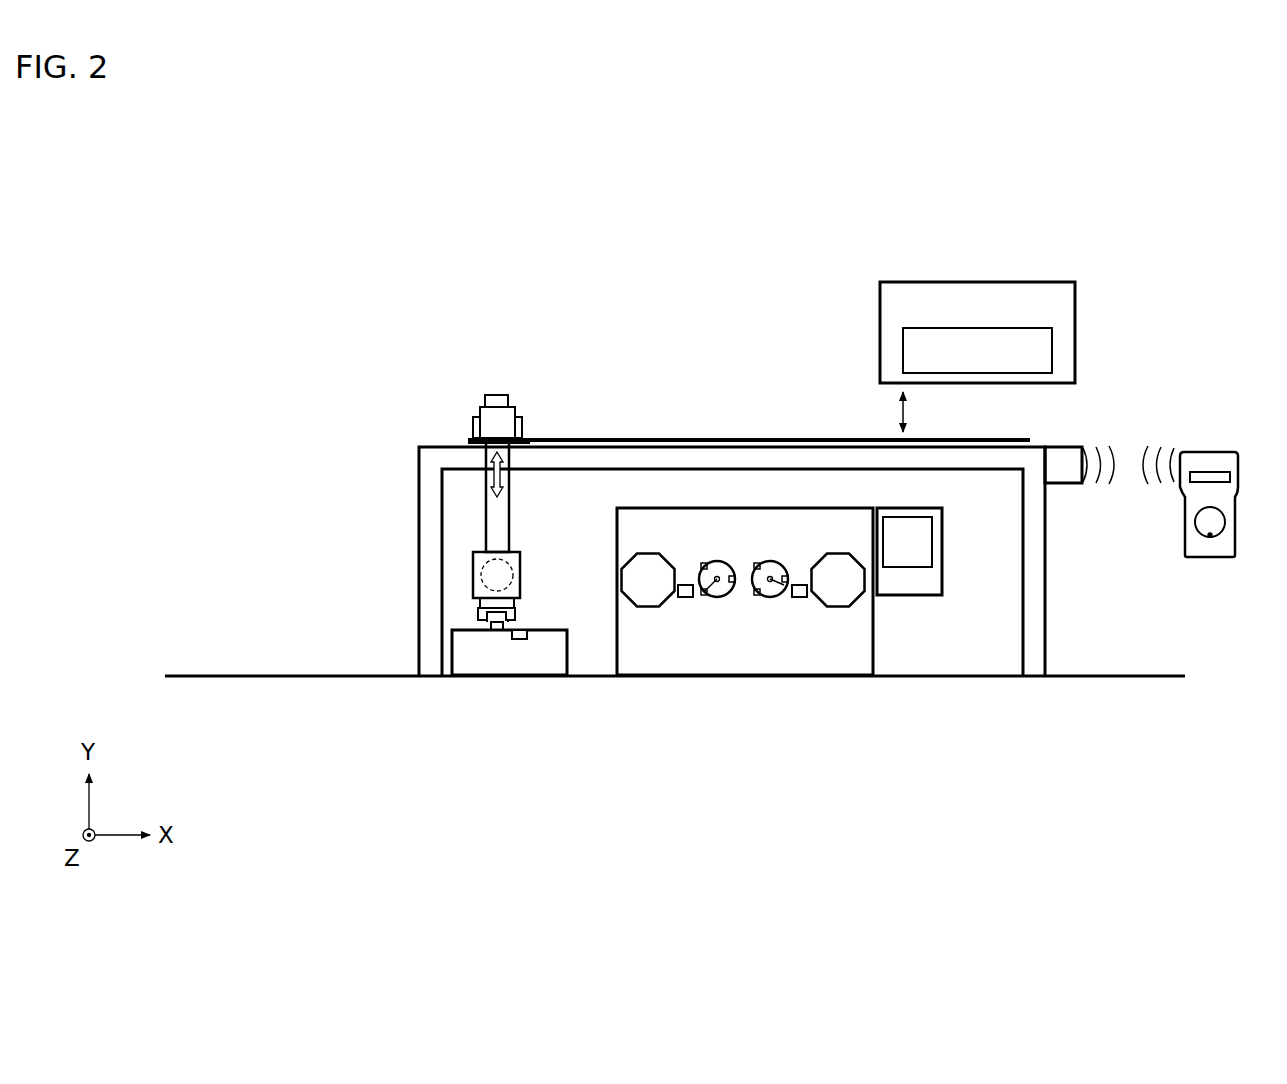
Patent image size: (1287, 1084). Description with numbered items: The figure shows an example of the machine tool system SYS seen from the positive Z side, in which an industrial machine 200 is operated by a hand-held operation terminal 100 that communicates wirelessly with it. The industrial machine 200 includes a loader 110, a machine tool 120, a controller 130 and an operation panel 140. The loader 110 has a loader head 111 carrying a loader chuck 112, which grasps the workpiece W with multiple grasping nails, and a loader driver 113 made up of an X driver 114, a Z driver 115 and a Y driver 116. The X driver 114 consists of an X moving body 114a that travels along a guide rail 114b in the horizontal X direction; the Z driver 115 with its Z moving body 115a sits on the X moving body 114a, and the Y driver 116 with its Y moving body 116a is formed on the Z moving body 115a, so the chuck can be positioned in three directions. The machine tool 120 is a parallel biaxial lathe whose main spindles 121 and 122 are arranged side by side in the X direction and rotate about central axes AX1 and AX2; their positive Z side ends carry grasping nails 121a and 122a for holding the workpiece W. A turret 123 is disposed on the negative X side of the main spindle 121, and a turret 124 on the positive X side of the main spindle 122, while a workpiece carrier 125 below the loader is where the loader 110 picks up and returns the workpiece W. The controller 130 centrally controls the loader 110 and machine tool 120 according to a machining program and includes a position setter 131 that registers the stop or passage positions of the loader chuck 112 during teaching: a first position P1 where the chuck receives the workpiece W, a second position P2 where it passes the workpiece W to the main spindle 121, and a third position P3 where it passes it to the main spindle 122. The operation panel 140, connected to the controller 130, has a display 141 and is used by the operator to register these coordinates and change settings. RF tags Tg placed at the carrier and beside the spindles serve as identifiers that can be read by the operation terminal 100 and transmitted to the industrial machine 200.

The machine tool system SYS is at (542, 163).
The industrial machine 200 is at (760, 263).
The loader 110 is at (414, 385).
The loader head 111 is at (469, 560).
The loader chuck 112 is at (480, 603).
The loader driver 113 is at (477, 394).
The X driver 114 is at (735, 366).
The X moving body 114a is at (478, 437).
The guide rail 114b is at (697, 438).
The Z driver 115 is at (377, 451).
The Z moving body 115a is at (470, 437).
The Y driver 116 is at (392, 496).
The Y moving body 116a is at (486, 496).
The machine tool 120 is at (883, 648).
The main spindle 121 is at (717, 598).
The grasping nails 121a is at (705, 565).
The main spindle 122 is at (770, 598).
The grasping nails 122a is at (760, 563).
The turret 123 is at (647, 600).
The turret 124 is at (838, 606).
The workpiece carrier 125 is at (520, 658).
The controller 130 is at (903, 280).
The position setter 131 is at (1017, 328).
The operation panel 140 is at (943, 520).
The display 141 is at (920, 550).
The operation terminal 100 is at (1182, 526).
The first position P1 is at (522, 604).
The second position P2 is at (733, 562).
The third position P3 is at (789, 560).
The RF tag Tg is at (523, 631).
The workpiece W is at (490, 623).
The central axis AX1 is at (702, 593).
The central axis AX2 is at (787, 593).